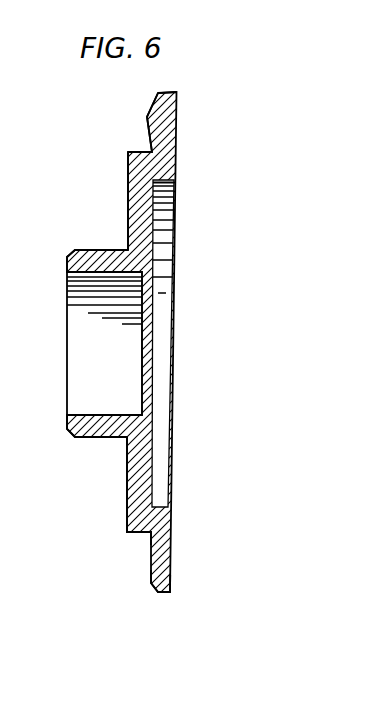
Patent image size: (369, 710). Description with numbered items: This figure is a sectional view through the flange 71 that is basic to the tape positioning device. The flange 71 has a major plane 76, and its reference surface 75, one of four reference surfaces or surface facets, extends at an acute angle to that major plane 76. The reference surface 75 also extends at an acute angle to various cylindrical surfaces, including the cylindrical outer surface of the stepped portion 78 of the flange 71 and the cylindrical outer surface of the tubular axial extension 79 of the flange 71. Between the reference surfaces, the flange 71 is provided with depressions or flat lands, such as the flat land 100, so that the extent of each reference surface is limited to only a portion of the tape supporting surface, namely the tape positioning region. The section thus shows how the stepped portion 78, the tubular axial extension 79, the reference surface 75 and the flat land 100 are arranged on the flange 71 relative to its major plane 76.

The flange 71 is at (170, 552).
The reference surface 75 is at (147, 127).
The major plane 76 is at (167, 585).
The stepped portion 78 is at (128, 533).
The tubular axial extension 79 is at (96, 250).
The flat land 100 is at (122, 496).